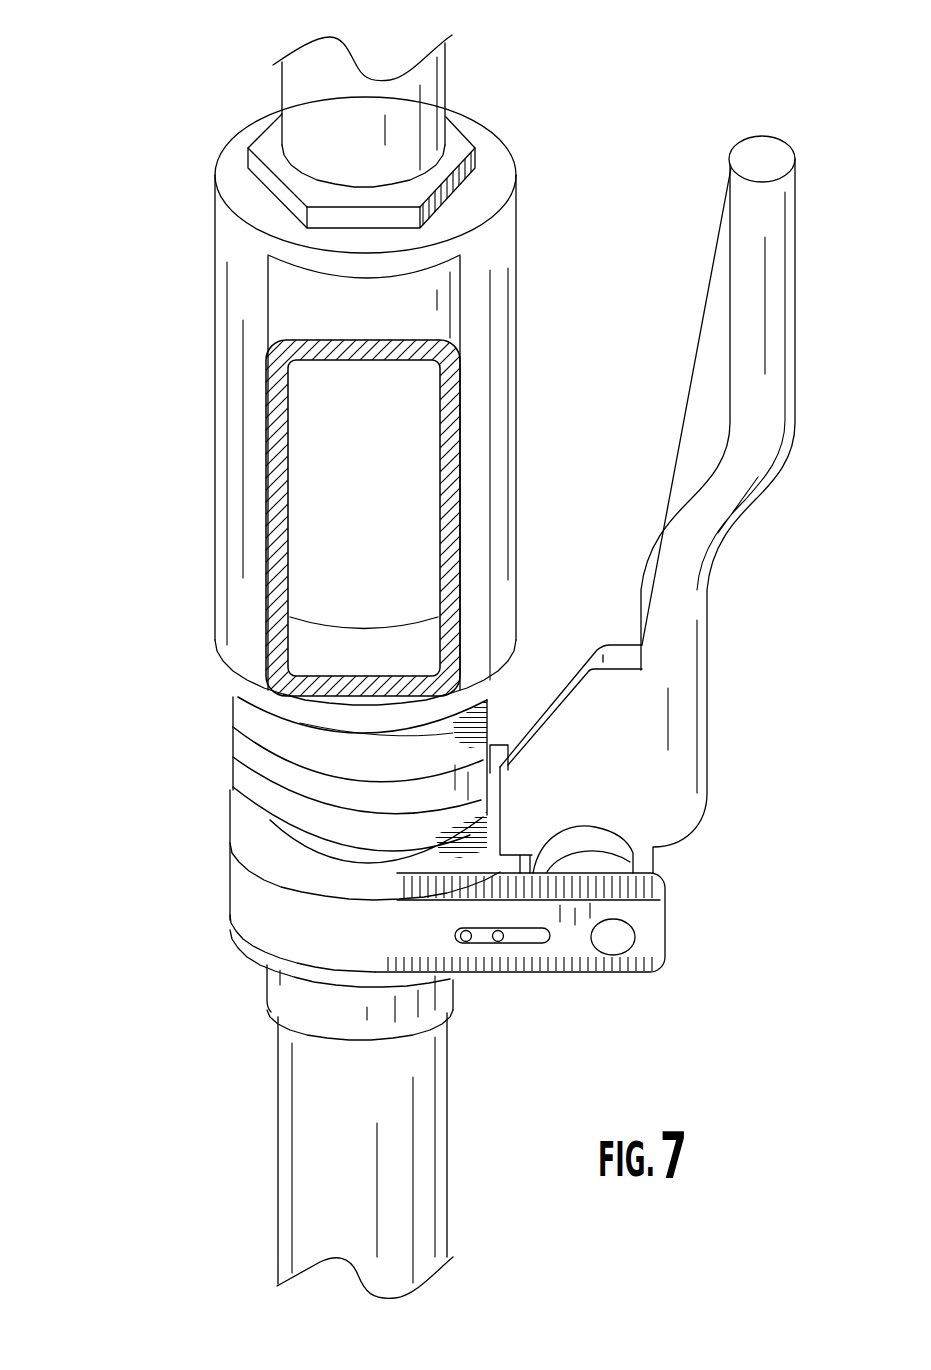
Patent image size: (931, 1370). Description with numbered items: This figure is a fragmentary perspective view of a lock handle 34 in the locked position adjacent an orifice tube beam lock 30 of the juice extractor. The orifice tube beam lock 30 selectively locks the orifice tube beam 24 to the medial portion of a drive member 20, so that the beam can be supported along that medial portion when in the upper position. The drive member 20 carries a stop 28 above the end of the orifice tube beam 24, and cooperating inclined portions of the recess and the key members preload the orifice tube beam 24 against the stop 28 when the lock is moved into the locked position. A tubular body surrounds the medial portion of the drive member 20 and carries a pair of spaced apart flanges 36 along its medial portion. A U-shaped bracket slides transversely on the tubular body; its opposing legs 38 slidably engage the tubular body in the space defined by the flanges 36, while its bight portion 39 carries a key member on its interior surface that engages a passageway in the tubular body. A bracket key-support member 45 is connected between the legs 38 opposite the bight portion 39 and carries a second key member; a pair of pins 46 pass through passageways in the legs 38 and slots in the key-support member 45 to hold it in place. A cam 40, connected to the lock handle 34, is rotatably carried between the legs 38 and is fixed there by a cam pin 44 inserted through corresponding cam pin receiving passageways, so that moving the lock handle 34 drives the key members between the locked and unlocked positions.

The drive member 20 is at (440, 82).
The stop 28 is at (473, 157).
The orifice tube beam 24 is at (283, 405).
The lock handle 34 is at (714, 680).
The flanges 36 is at (230, 820).
The bight portion 39 is at (230, 870).
The orifice tube beam lock 30 is at (409, 887).
The opposing legs 38 is at (583, 975).
The cam 40 is at (636, 860).
The cam pin 44 is at (617, 945).
The bracket key-support member 45 is at (513, 867).
The pins 46 is at (462, 940).